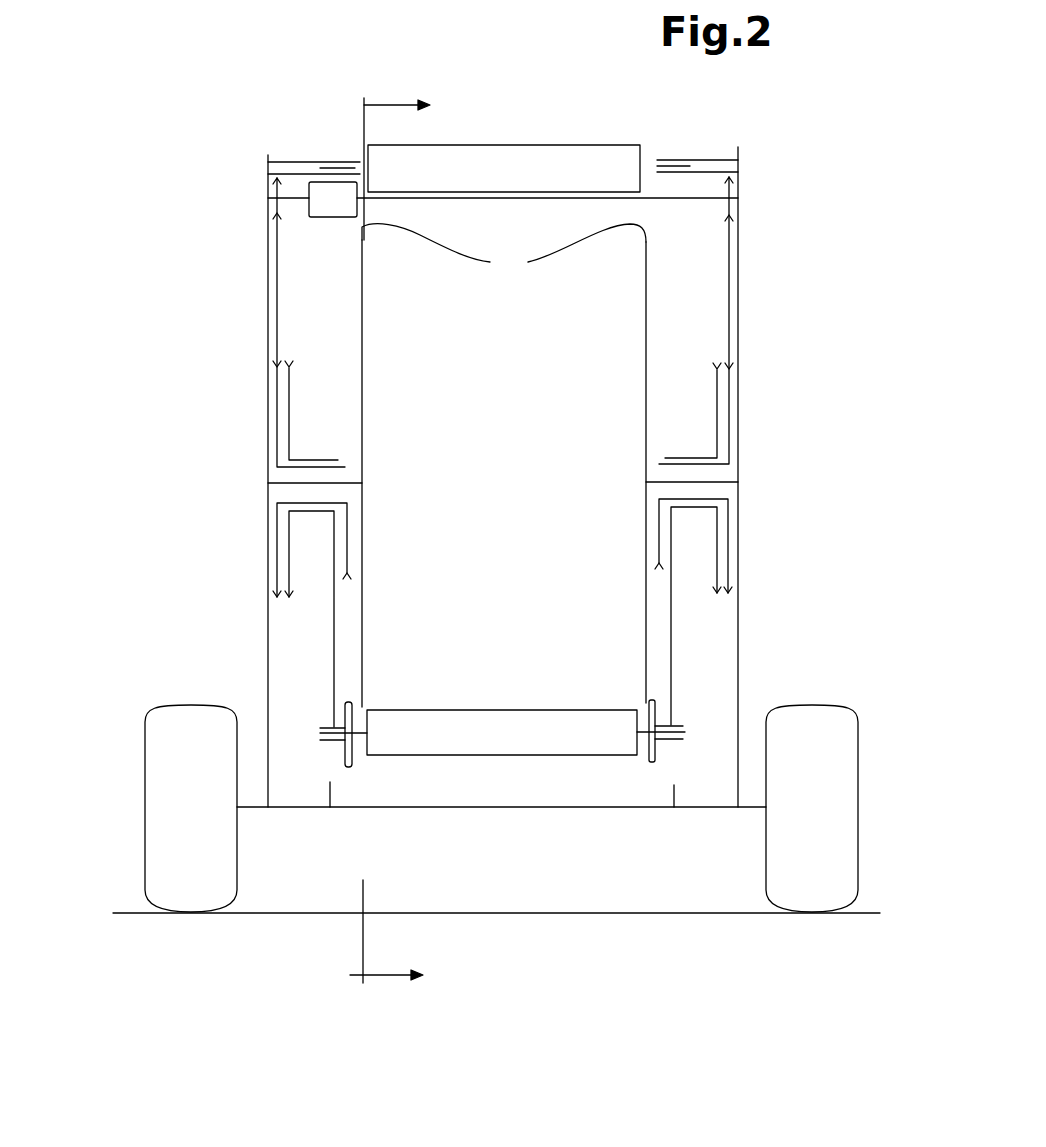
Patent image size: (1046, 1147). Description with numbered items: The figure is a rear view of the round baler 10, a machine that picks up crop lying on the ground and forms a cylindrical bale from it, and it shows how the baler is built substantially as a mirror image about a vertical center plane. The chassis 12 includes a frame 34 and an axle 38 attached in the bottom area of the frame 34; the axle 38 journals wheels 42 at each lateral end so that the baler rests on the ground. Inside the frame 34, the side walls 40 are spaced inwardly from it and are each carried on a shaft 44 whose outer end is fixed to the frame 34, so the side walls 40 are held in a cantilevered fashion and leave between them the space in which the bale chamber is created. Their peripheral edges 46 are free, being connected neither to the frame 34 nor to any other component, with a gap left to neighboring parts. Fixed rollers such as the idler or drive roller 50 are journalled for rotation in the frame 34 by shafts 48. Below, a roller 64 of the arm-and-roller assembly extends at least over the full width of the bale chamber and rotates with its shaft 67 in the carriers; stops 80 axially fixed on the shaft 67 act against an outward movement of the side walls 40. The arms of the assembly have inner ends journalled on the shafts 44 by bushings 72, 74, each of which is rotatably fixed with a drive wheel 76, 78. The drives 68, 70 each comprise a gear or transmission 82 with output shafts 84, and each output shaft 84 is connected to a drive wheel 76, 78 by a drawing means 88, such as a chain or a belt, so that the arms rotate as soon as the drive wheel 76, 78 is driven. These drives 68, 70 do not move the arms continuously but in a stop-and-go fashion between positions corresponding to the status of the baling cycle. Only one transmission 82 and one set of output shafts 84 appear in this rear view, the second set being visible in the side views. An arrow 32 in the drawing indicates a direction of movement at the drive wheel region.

The round baler 10 is at (155, 130).
The chassis 12 is at (254, 668).
The direction arrow 32 is at (699, 545).
The frame 34 is at (740, 400).
The axle 38 is at (448, 807).
The side walls 40 is at (646, 540).
The wheels 42 is at (150, 880).
The shaft 44 is at (346, 483).
The peripheral edges 46 is at (504, 248).
The shafts 48 is at (362, 170).
The idler or drive rollers 50 is at (500, 158).
The roller 64 is at (522, 737).
The shaft 67 is at (672, 737).
The drive 68 is at (715, 597).
The drive 70 is at (265, 277).
The bushing 72 is at (695, 510).
The bushing 74 is at (310, 502).
The drive wheel 76 is at (292, 575).
The drive wheel 78 is at (277, 577).
The stops 80 is at (352, 767).
The gear or transmission 82 is at (332, 192).
The output shafts 84 is at (685, 197).
The drawing means 88 is at (280, 303).